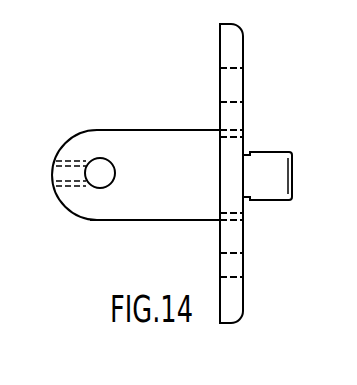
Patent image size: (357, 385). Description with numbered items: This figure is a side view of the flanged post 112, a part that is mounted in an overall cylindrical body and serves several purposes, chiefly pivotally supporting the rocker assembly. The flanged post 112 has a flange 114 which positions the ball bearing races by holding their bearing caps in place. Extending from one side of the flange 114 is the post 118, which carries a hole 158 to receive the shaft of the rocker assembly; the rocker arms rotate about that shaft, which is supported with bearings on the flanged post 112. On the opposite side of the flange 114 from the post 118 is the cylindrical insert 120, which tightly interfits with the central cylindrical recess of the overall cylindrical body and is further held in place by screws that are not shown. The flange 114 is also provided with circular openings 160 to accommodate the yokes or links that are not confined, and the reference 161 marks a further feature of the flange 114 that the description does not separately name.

The flanged post 112 is at (95, 221).
The flange 114 is at (220, 44).
The post 118 is at (119, 130).
The cylindrical insert 120 is at (281, 200).
The hole 158 is at (95, 158).
The circular openings 160 is at (221, 138).
The slot edge line 161 is at (227, 102).